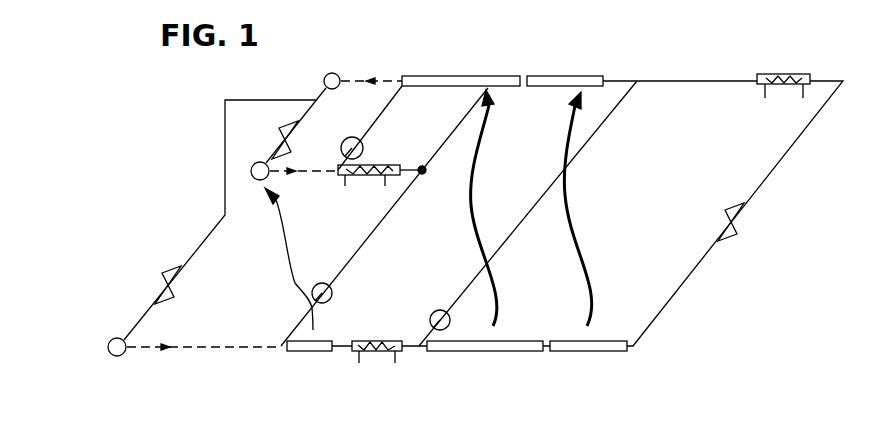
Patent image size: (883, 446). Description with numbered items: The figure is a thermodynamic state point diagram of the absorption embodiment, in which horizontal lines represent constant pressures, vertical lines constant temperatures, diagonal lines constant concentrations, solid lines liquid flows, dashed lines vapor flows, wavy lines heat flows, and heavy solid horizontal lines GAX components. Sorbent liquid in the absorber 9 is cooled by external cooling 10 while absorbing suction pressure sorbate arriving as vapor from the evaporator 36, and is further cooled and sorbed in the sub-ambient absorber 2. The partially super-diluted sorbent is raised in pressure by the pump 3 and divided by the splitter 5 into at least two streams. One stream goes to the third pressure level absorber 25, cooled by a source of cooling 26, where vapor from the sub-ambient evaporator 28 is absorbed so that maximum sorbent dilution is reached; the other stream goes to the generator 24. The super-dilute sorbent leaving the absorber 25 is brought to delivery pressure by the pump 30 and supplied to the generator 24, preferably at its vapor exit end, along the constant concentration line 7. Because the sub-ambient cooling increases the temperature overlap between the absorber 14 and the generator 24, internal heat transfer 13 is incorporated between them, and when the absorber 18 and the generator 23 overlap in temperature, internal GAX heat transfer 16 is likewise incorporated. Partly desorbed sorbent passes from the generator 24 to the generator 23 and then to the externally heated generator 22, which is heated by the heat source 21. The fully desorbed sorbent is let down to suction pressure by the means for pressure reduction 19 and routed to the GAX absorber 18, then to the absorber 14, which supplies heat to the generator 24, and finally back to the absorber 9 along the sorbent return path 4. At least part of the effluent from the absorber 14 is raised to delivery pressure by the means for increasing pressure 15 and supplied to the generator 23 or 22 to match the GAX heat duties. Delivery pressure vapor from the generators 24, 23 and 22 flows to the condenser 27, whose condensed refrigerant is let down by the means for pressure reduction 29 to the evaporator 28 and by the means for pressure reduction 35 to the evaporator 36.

The sub-ambient absorber 2 is at (302, 352).
The pump 3 is at (319, 283).
The signal line 4 is at (284, 259).
The splitter 5 is at (423, 175).
The conduit 7 is at (451, 118).
The absorber 9 is at (378, 340).
The external cooling 10 is at (358, 358).
The internal heat transfer 13 is at (492, 208).
The absorber 14 is at (488, 352).
The means for increasing pressure 15 is at (437, 310).
The internal GAX heat transfer 16 is at (576, 209).
The GAX absorber 18 is at (578, 352).
The means for pressure reduction 19 is at (738, 230).
The heat source 21 is at (768, 97).
The externally heated generator 22 is at (785, 72).
The generator 23 is at (546, 75).
The generator 24 is at (453, 75).
The third pressure level absorber 25 is at (392, 165).
The source of cooling 26 is at (346, 182).
The condenser 27 is at (331, 73).
The sub-ambient evaporator 28 is at (258, 162).
The means for pressure reduction 29 is at (280, 134).
The pump 30 is at (346, 139).
The means for pressure reduction 35 is at (168, 281).
The evaporator 36 is at (118, 338).